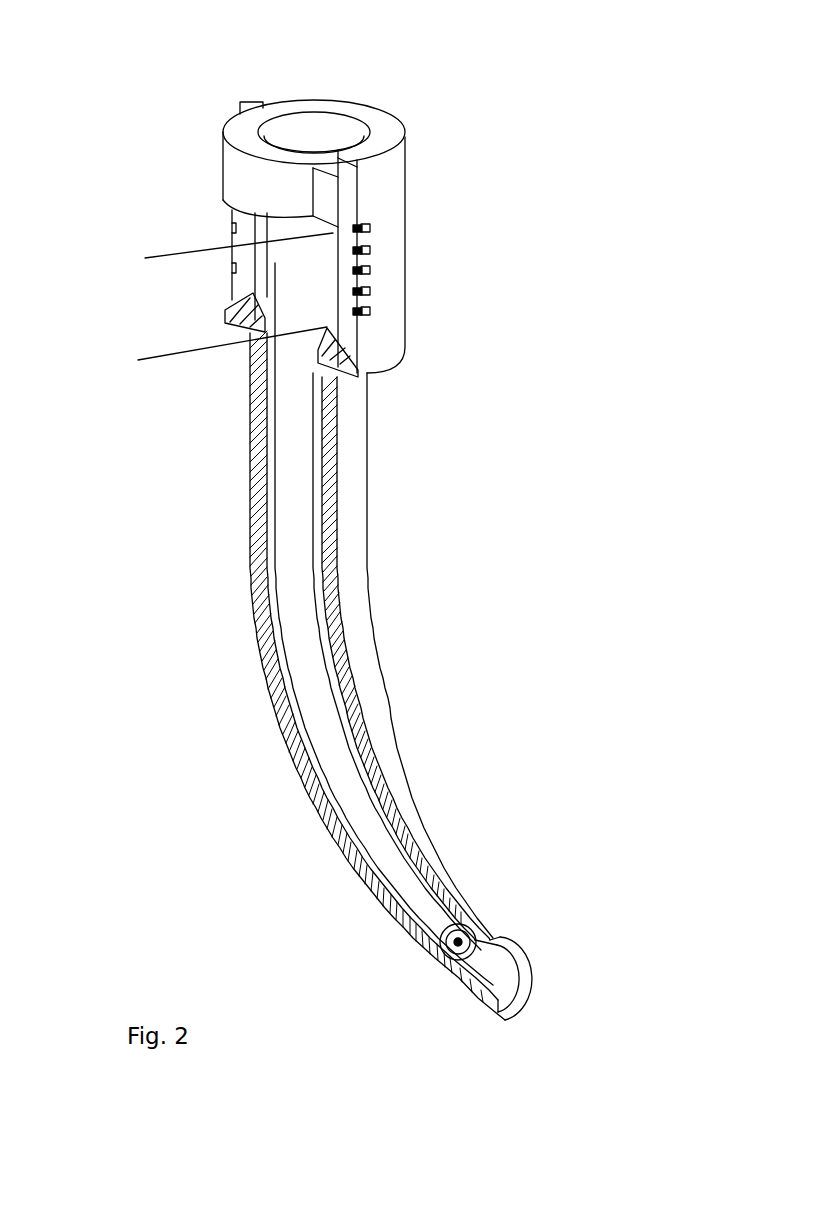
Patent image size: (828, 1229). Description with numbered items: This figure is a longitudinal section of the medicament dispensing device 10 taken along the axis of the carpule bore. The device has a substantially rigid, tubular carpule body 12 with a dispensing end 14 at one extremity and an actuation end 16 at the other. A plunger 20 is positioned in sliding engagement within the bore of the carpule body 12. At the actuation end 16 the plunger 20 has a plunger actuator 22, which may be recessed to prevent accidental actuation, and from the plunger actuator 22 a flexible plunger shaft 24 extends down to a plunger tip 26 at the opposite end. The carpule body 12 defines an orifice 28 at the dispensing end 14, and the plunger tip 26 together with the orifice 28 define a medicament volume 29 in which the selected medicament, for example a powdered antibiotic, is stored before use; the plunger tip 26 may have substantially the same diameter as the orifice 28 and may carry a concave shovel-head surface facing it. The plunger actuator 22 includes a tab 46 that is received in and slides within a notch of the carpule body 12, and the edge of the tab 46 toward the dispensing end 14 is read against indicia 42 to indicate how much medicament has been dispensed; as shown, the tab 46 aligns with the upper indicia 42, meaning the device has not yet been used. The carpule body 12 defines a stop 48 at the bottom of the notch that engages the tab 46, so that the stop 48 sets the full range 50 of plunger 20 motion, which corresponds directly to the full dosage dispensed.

The medicament dispensing device 10 is at (522, 328).
The carpule body 12 is at (363, 485).
The dispensing end 14 is at (572, 837).
The actuation end 16 is at (180, 205).
The plunger 20 is at (230, 473).
The plunger actuator 22 is at (310, 135).
The flexible plunger shaft 24 is at (310, 673).
The plunger tip 26 is at (458, 942).
The orifice 28 is at (522, 978).
The medicament volume 29 is at (485, 970).
The indicia 42 is at (363, 248).
The tab 46 is at (366, 205).
The stop 48 is at (358, 370).
The range of plunger motion 50 is at (158, 258).